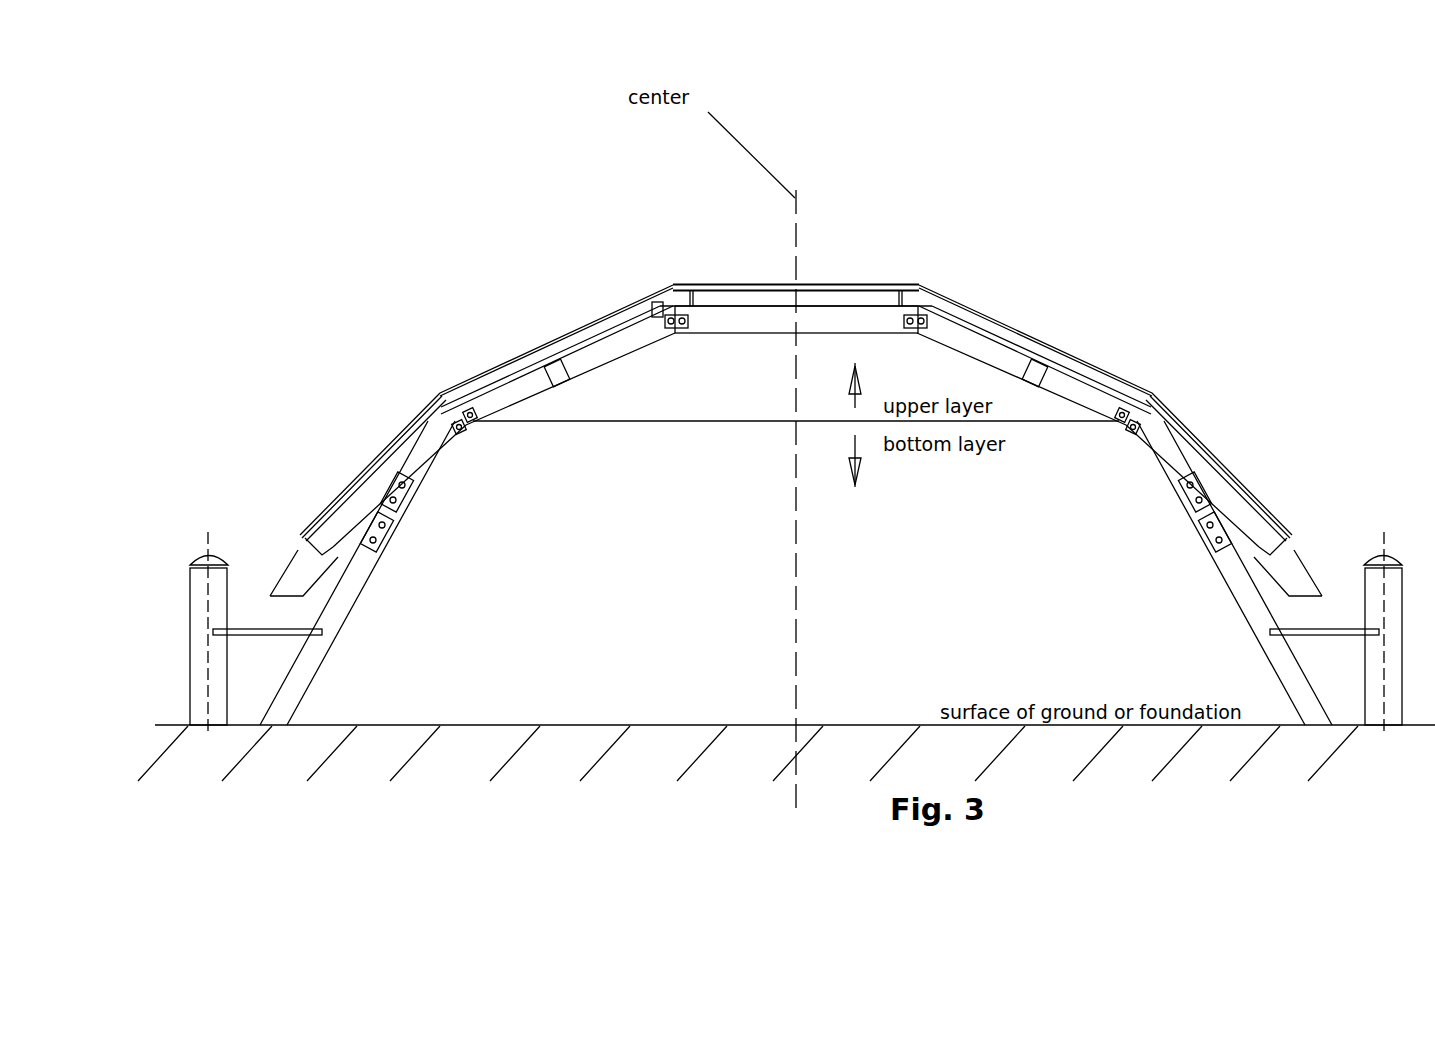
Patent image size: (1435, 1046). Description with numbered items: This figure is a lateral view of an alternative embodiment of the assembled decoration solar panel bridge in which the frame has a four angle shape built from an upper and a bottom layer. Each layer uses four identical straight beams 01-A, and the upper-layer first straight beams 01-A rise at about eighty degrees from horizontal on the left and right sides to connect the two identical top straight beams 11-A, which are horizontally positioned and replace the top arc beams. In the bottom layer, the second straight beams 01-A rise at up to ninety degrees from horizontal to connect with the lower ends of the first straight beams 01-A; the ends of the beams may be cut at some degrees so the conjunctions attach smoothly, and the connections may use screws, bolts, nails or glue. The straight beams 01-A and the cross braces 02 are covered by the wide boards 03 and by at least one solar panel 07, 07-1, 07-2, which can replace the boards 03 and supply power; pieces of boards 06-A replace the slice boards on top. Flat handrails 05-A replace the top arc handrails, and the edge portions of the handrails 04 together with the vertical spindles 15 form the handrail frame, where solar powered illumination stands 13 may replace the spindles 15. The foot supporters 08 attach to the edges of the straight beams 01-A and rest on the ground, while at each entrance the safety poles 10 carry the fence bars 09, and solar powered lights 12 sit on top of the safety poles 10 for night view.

The straight beam 01-A is at (766, 460).
The cross brace 02 is at (333, 557).
The wide board 03 is at (818, 297).
The solar panel 07 is at (398, 444).
The piece of board 06-A is at (706, 298).
The top straight beam 11-A is at (748, 322).
The flat handrail 05-A is at (860, 283).
The vertical spindle of the handrail 15 is at (936, 264).
The solar powered illumination stand 13 is at (940, 305).
The edge portion of handrail 04 is at (967, 315).
The solar panel 07-1 is at (1010, 353).
The solar panel 07-2 is at (1150, 407).
The foot supporter 08 is at (1240, 578).
The fence bar 09 is at (1325, 628).
The safety pole 10 is at (1382, 588).
The solar powered light 12 is at (1385, 557).